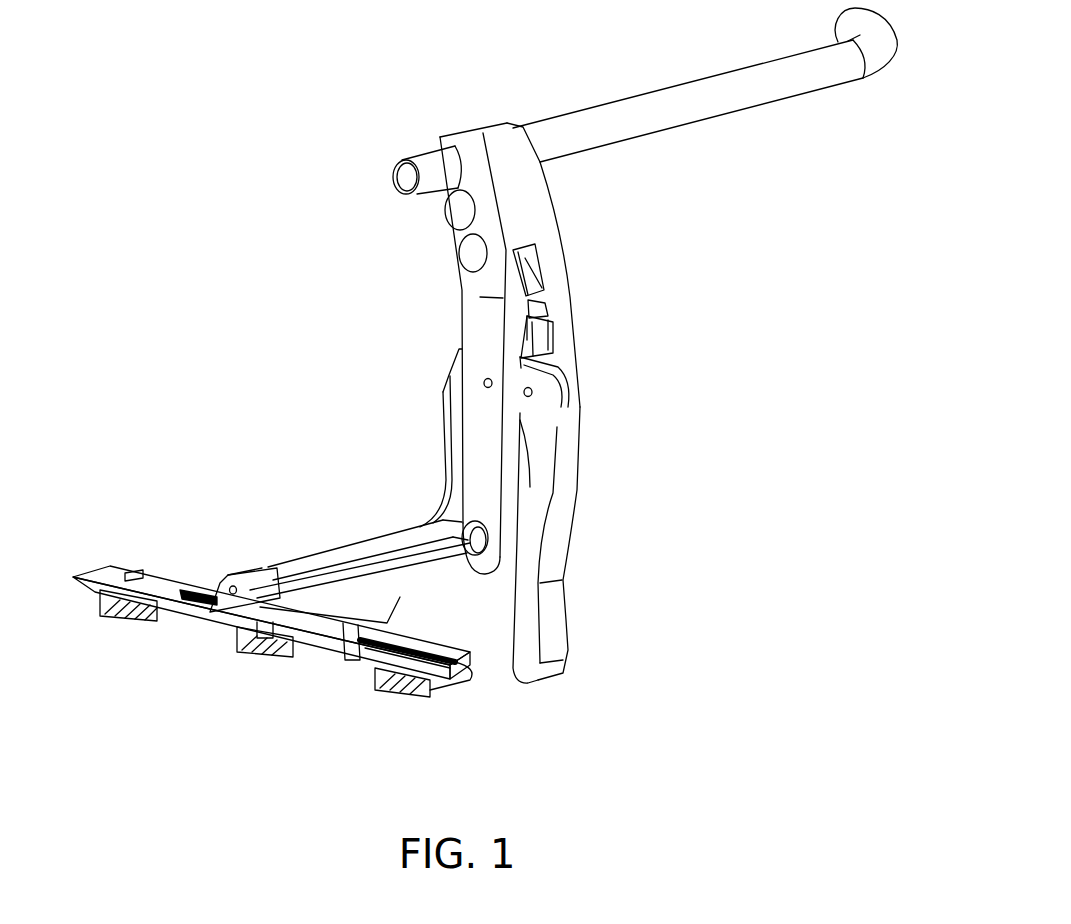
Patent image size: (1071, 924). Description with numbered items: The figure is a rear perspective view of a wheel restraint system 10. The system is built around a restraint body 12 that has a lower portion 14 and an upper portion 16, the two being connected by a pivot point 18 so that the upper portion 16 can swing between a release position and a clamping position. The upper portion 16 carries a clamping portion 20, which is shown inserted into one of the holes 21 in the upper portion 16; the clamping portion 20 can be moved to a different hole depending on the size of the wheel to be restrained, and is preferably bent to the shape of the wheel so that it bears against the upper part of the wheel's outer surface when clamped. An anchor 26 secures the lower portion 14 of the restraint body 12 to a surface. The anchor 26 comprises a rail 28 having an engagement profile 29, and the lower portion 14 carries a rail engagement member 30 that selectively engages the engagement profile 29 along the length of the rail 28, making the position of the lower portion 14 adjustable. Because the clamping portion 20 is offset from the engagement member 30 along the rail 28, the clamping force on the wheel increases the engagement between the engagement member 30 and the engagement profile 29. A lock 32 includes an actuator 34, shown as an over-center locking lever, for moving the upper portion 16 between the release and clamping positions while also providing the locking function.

The wheel restraint system 10 is at (468, 369).
The restraint body 12 is at (465, 137).
The lower portion 14 is at (280, 568).
The upper portion 16 is at (497, 296).
The pivot point 18 is at (417, 513).
The clamping portion 20 is at (693, 81).
The holes 21 is at (457, 213).
The anchor 26 is at (117, 620).
The rail 28 is at (73, 577).
The engagement profile 29 is at (207, 590).
The rail engagement member 30 is at (207, 623).
The lock 32 is at (581, 405).
The actuator 34 is at (575, 493).